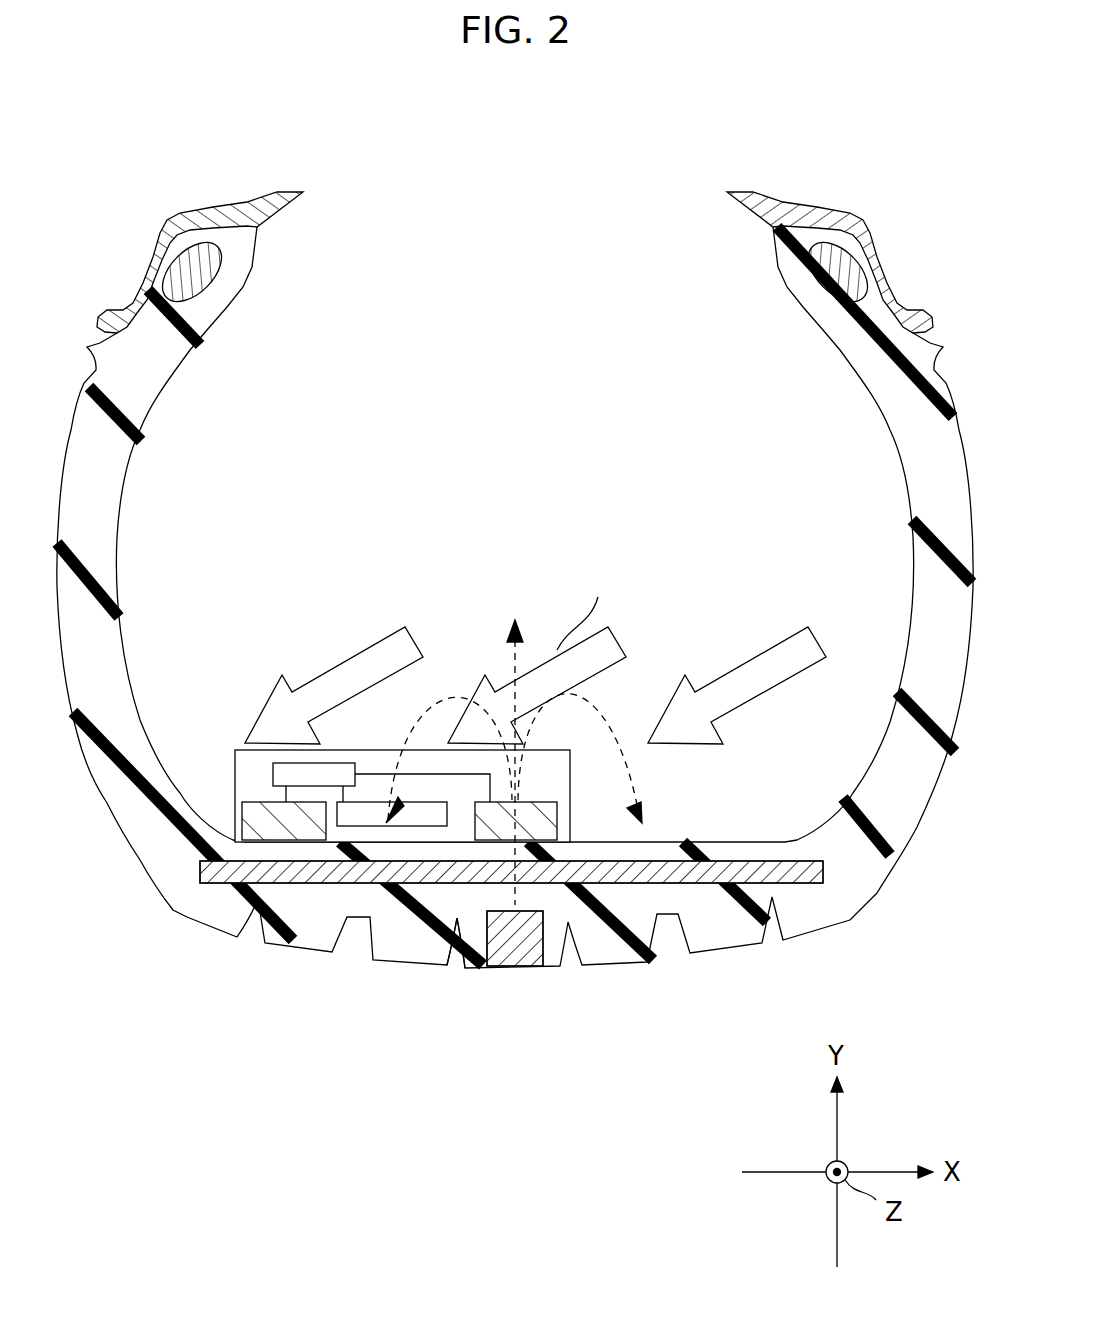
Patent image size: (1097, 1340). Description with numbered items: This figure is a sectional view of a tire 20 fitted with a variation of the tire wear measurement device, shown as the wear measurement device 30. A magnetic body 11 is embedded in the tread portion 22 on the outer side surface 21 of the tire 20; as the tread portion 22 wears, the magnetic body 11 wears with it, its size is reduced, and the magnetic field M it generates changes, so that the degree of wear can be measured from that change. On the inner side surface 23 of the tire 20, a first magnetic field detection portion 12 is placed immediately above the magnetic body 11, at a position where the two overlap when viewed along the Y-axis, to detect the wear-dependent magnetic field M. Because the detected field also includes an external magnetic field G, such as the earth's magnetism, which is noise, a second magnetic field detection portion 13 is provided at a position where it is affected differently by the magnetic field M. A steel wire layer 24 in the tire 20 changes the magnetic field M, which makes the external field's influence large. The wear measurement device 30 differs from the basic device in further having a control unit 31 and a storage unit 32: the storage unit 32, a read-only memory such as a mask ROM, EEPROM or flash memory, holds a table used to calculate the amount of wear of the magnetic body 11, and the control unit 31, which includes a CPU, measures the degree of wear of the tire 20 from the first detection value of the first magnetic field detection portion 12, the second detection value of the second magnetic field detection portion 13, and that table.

The magnetic body 11 is at (513, 947).
The first magnetic field detection portion 12 is at (520, 817).
The second magnetic field detection portion 13 is at (278, 812).
The tire 20 is at (190, 910).
The outer side surface 21 is at (330, 953).
The tread portion 22 is at (463, 963).
The inner side surface 23 is at (788, 838).
The steel wire layer 24 is at (563, 883).
The wear measurement device 30 is at (511, 483).
The control unit 31 is at (328, 771).
The storage unit 32 is at (402, 810).